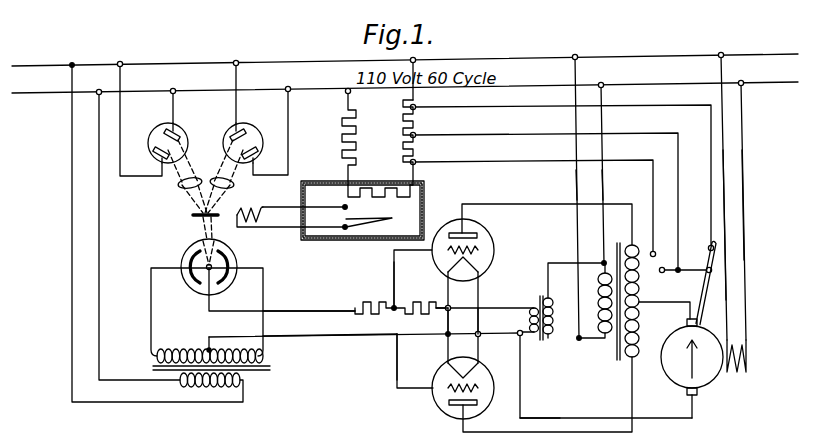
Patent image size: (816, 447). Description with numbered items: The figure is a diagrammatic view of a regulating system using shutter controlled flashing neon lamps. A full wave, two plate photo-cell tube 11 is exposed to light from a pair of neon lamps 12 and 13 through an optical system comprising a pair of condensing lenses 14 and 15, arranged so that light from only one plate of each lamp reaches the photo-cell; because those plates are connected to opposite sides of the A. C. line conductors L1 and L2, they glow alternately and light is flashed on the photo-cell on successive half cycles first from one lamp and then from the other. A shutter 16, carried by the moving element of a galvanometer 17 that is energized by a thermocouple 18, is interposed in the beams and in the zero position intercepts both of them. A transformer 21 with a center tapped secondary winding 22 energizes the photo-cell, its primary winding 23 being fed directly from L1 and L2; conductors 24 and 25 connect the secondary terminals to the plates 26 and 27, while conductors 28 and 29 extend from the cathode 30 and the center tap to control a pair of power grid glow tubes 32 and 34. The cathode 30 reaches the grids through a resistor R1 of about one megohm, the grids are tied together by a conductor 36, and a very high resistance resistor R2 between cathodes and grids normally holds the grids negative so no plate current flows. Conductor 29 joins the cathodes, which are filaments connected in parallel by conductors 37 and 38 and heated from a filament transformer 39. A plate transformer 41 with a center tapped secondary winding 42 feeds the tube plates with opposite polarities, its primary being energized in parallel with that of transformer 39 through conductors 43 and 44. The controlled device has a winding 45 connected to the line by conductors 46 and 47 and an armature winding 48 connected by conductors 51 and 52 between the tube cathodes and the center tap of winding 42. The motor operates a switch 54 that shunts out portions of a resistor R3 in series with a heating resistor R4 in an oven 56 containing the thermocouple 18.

The A. C. line conductor L1 is at (26, 47).
The A. C. line conductor L2 is at (26, 98).
The photo-cell tube 11 is at (183, 254).
The neon lamp 12 is at (159, 126).
The neon lamp 13 is at (257, 126).
The condensing lens 14 is at (180, 187).
The condensing lens 15 is at (234, 187).
The shutter 16 is at (193, 216).
The galvanometer 17 is at (262, 216).
The thermocouple 18 is at (381, 223).
The transformer 21 is at (270, 370).
The center tapped secondary winding 22 is at (264, 353).
The primary winding 23 is at (243, 383).
The conductor 24 is at (151, 324).
The conductor 25 is at (263, 323).
The plate 26 is at (191, 280).
The plate 27 is at (227, 280).
The conductor 28 is at (302, 310).
The conductor 29 is at (326, 337).
The cathode 30 is at (213, 265).
The vacuum tube 32 is at (494, 251).
The vacuum tube 34 is at (489, 370).
The conductor 36 is at (394, 265).
The conductor 37 is at (448, 300).
The conductor 38 is at (478, 299).
The filament transformer 39 is at (538, 342).
The plate transformer 41 is at (619, 360).
The center tapped secondary winding 42 is at (640, 319).
The conductor 43 is at (576, 184).
The conductor 44 is at (603, 187).
The winding 45 is at (748, 357).
The conductor 46 is at (727, 284).
The conductor 47 is at (746, 237).
The armature winding 48 is at (713, 386).
The conductor 51 is at (657, 302).
The conductor 52 is at (555, 418).
The switch 54 is at (704, 255).
The oven 56 is at (424, 196).
The resistor R1 is at (363, 279).
The resistor R2 is at (415, 281).
The resistor R3 is at (406, 129).
The heating resistor R4 is at (386, 185).